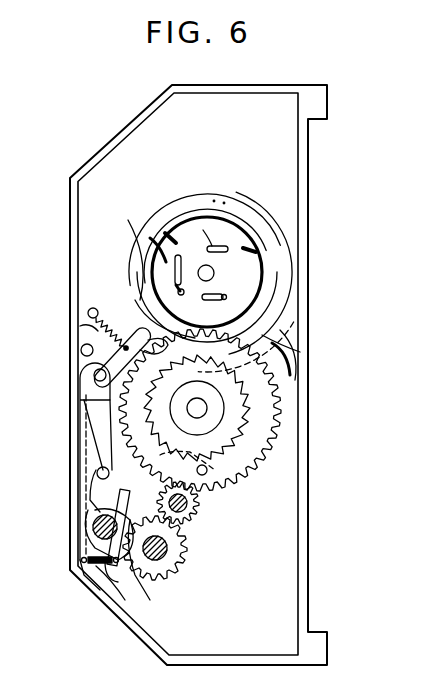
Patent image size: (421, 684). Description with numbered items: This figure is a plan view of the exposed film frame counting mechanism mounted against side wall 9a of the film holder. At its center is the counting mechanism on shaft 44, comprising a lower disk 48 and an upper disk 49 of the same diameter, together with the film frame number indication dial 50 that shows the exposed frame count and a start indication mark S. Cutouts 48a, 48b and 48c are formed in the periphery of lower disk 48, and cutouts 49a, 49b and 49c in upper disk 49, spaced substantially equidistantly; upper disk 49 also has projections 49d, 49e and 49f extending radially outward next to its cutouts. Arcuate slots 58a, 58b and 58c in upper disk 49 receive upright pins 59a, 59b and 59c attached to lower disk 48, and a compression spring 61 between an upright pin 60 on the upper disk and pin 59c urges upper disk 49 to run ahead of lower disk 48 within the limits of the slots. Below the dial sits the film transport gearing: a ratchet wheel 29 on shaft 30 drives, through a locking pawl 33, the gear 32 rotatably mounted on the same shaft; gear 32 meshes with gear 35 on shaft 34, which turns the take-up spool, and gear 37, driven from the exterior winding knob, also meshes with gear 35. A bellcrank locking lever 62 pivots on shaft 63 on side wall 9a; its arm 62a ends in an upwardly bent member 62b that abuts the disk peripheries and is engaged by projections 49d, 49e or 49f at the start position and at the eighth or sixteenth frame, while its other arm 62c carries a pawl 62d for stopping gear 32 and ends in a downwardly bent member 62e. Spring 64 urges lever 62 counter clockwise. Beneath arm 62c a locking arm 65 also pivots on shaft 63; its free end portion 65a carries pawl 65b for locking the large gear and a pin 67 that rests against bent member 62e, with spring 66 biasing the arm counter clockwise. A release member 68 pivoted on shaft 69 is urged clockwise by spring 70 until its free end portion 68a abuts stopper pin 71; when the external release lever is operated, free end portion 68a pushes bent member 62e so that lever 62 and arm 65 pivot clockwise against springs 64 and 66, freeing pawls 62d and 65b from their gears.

The side wall 9a is at (276, 100).
The disk 48 is at (270, 235).
The cutout 48a is at (262, 335).
The cutout 48b is at (262, 242).
The cutout 48c is at (150, 240).
The disk 49 is at (262, 290).
The cutout 49a is at (168, 322).
The cutout 49b is at (262, 268).
The cutout 49c is at (160, 232).
The projection 49d is at (275, 350).
The projection 49e is at (258, 255).
The projection 49f is at (135, 222).
The film frame number indication dial 50 is at (226, 205).
The shaft 44 is at (214, 273).
The arcuate slot 58a is at (221, 298).
The arcuate slot 58b is at (240, 226).
The arcuate slot 58c is at (185, 215).
The upright pin 59a is at (258, 310).
The upright pin 59b is at (204, 230).
The upright pin 59c is at (160, 262).
The upright pin 60 is at (152, 280).
The compression spring 61 is at (172, 290).
The ratchet wheel 29 is at (226, 462).
The shaft 30 is at (208, 414).
The gear 32 is at (284, 412).
The locking pawl 33 is at (200, 504).
The shaft 34 is at (189, 548).
The gear 35 is at (210, 478).
The gear 37 is at (184, 566).
The locking lever 62 is at (118, 360).
The arm 62a is at (80, 326).
The upwardly bent member 62b is at (286, 370).
The arm 62c is at (95, 435).
The pawl 62d is at (100, 486).
The downwardly bent member 62e is at (84, 560).
The shaft 63 is at (94, 374).
The spring 64 is at (90, 311).
The locking arm 65 is at (80, 405).
The free end portion 65a is at (93, 528).
The pawl 65b is at (96, 462).
The spring 66 is at (81, 350).
The pin 67 is at (88, 520).
The release member 68 is at (100, 578).
The free end portion 68a is at (158, 580).
The shaft 69 is at (82, 566).
The spring 70 is at (108, 568).
The stopper pin 71 is at (112, 492).